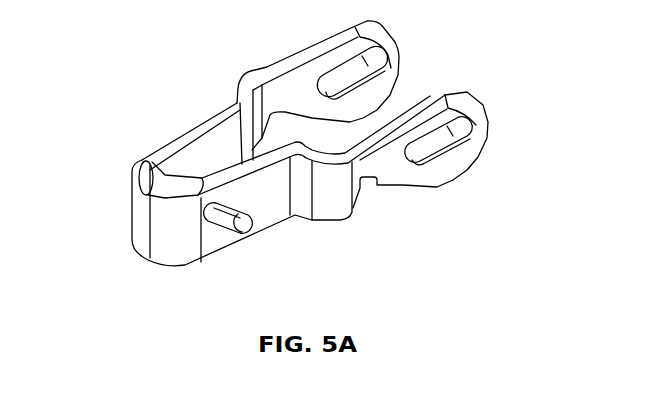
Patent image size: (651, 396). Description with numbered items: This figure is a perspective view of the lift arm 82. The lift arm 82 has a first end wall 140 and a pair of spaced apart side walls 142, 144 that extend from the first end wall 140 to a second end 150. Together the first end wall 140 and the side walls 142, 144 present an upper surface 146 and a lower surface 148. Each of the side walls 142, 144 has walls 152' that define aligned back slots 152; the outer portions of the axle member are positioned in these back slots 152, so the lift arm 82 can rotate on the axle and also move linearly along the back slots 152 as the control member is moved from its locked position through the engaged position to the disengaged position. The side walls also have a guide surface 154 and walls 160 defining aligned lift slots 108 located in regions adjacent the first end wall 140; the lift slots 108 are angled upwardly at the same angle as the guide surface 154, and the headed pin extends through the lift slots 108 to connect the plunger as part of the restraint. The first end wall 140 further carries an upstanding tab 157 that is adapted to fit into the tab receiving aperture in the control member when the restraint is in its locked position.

The lift arm 82 is at (125, 131).
The lift slots 108 is at (197, 257).
The first end wall 140 is at (140, 238).
The side wall 142 is at (272, 70).
The side wall 144 is at (462, 161).
The upper surface 146 is at (207, 131).
The lower surface 148 is at (205, 259).
The second end 150 is at (428, 90).
The back slots 152 is at (433, 101).
The walls 152' is at (416, 119).
The guide surface 154 is at (437, 187).
The upstanding tab 157 is at (150, 181).
The walls 160 is at (251, 233).